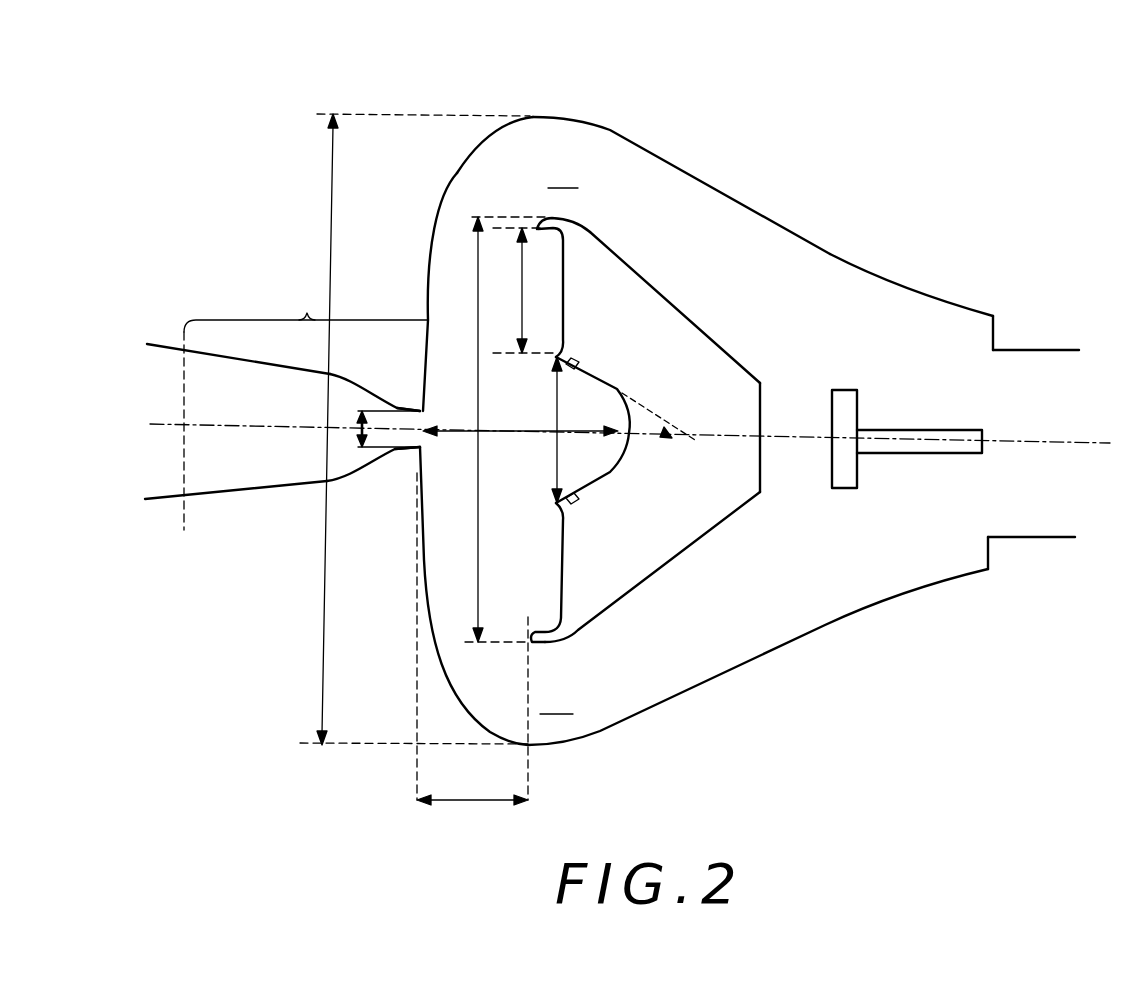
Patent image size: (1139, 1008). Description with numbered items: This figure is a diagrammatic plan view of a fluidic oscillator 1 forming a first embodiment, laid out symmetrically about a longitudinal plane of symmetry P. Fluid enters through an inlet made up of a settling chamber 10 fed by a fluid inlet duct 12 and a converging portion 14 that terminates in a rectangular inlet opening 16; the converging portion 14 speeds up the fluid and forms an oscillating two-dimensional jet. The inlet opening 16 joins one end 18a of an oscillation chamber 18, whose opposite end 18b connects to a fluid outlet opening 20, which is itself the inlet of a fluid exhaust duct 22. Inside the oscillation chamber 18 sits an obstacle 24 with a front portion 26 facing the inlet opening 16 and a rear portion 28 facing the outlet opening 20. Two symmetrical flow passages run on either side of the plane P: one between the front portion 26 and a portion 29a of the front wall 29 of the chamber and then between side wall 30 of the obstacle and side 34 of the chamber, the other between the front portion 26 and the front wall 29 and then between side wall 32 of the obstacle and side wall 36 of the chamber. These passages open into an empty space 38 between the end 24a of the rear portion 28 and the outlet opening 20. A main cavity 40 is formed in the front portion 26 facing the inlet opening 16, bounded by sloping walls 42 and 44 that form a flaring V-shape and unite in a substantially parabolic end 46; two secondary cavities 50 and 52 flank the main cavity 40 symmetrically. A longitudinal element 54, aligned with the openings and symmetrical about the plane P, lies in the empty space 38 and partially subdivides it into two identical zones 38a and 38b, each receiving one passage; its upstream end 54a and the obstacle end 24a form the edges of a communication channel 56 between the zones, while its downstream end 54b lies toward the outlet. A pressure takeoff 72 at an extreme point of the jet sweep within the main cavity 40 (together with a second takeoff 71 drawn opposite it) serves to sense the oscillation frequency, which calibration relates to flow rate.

The fluidic oscillator 1 is at (300, 262).
The settling chamber 10 is at (230, 358).
The fluid inlet duct 12 is at (165, 334).
The converging portion 14 is at (330, 377).
The inlet opening 16 is at (410, 417).
The oscillation chamber 18 is at (736, 394).
The end of oscillation chamber 18a is at (407, 448).
The end of oscillation chamber 18b is at (985, 318).
The fluid outlet opening 20 is at (990, 517).
The fluid exhaust duct 22 is at (1045, 350).
The obstacle 24 is at (624, 431).
The end of rear portion of obstacle 24a is at (762, 470).
The front portion of obstacle 26 is at (550, 360).
The rear portion of obstacle 28 is at (750, 383).
The front wall of oscillation chamber 29 is at (457, 172).
The portion of front wall 29a is at (435, 223).
The side wall of obstacle 30 is at (677, 302).
The side wall of obstacle 32 is at (627, 602).
The side of oscillation chamber 34 is at (750, 207).
The side wall of oscillation chamber 36 is at (790, 638).
The empty space 38 is at (867, 353).
The zone of empty space 38a is at (903, 363).
The zone of empty space 38b is at (895, 568).
The main cavity 40 is at (602, 472).
The sloping wall of main cavity 42 is at (593, 377).
The sloping wall of main cavity 44 is at (600, 483).
The parabolic end 46 is at (617, 417).
The secondary cavity 50 is at (560, 302).
The secondary cavity 52 is at (537, 574).
The longitudinal element 54 is at (904, 506).
The upstream end of longitudinal element 54a is at (823, 457).
The downstream end of longitudinal element 54b is at (984, 447).
The communication channel 56 is at (790, 422).
The upper notch 71 is at (573, 367).
The pressure takeoff 72 is at (567, 503).
The longitudinal plane of symmetry P is at (1097, 445).